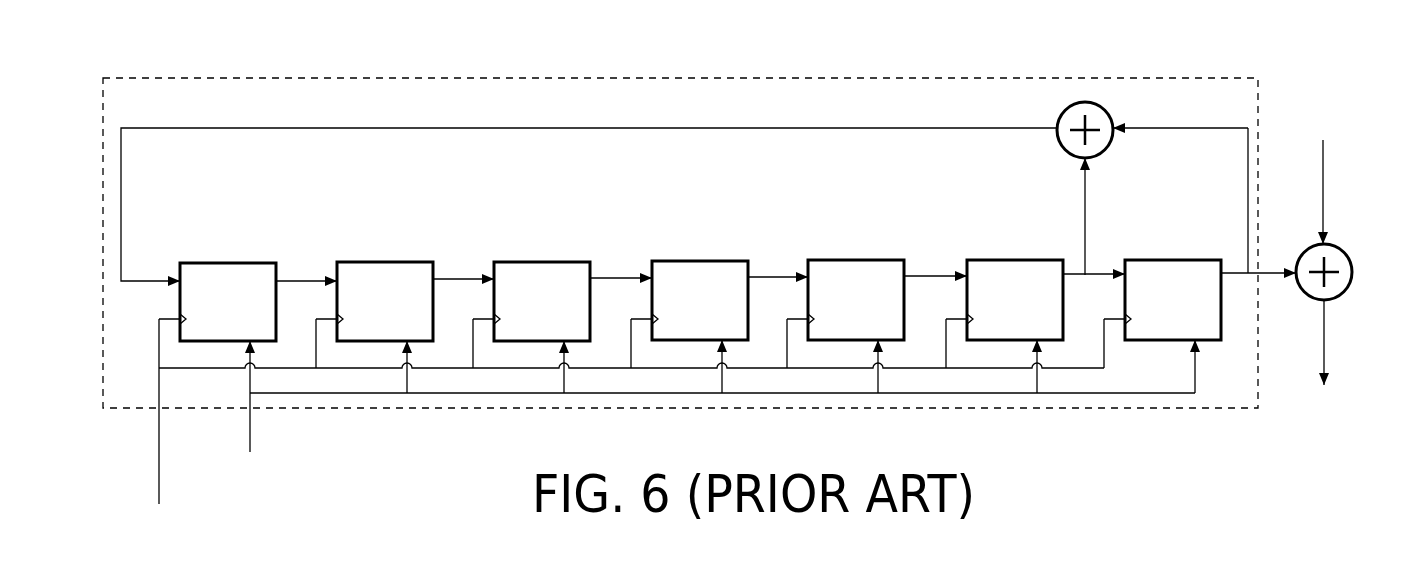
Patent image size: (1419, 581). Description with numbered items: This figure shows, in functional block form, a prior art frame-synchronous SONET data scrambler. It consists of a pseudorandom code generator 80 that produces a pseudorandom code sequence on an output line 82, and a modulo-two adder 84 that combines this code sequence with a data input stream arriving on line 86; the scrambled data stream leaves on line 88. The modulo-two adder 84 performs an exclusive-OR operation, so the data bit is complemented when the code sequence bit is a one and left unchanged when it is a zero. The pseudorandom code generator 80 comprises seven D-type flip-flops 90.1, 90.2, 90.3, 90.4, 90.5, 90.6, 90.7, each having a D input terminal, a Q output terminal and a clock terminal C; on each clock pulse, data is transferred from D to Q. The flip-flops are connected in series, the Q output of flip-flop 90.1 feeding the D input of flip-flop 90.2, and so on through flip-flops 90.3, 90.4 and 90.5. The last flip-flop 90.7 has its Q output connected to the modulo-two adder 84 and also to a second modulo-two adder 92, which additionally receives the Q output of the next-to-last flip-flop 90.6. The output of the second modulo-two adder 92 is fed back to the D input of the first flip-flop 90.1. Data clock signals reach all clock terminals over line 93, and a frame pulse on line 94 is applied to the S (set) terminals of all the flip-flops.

The pseudorandom code generator 80 is at (877, 78).
The output line 82 is at (1270, 274).
The modulo-2 adder 84 is at (1352, 272).
The data input line 86 is at (1323, 160).
The scrambled data output line 88 is at (1324, 335).
The first D-type flip-flop 90.1 is at (255, 263).
The second D-type flip-flop 90.2 is at (414, 262).
The third D-type flip-flop 90.3 is at (571, 262).
The fourth D-type flip-flop 90.4 is at (729, 261).
The fifth D-type flip-flop 90.5 is at (886, 260).
The next-to-last D-type flip-flop 90.6 is at (1045, 260).
The last D-type flip-flop 90.7 is at (1203, 260).
The second modulo-2 adder 92 is at (1065, 150).
The data clock line 93 is at (159, 480).
The frame pulse line 94 is at (250, 431).